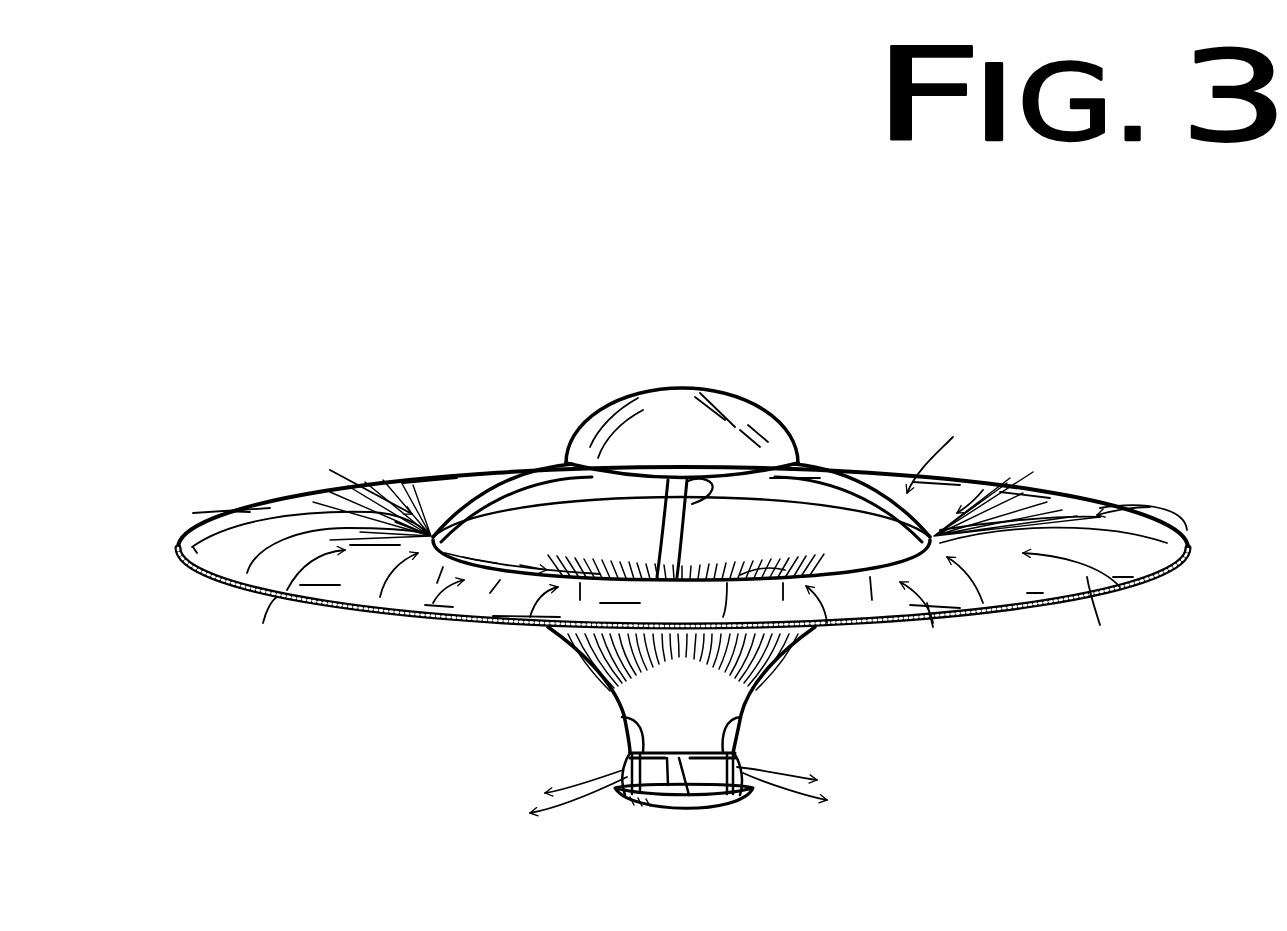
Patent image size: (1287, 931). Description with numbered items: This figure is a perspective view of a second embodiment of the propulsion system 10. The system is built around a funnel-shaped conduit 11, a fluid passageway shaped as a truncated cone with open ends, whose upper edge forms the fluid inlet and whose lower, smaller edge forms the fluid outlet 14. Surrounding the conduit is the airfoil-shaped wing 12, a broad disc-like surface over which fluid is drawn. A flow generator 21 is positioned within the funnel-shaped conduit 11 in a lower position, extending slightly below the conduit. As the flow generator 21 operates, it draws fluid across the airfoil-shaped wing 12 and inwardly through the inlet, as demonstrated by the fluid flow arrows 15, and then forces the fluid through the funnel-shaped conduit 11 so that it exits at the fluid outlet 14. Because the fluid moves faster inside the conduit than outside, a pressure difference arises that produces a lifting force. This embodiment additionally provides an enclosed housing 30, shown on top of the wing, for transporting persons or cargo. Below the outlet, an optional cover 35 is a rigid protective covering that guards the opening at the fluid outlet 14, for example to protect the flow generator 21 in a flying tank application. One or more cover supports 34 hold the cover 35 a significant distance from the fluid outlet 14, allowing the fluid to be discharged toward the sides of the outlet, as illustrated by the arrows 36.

The propulsion system 10 is at (460, 323).
The funnel-shaped conduit 11 is at (757, 693).
The airfoil-shaped wing 12 is at (1067, 512).
The fluid outlet 14 is at (745, 750).
The fluid flow arrows 15 is at (457, 492).
The flow generator 21 is at (618, 723).
The enclosed housing 30 is at (706, 395).
The cover supports 34 is at (630, 755).
The cover 35 is at (672, 806).
The arrows 36 is at (813, 797).